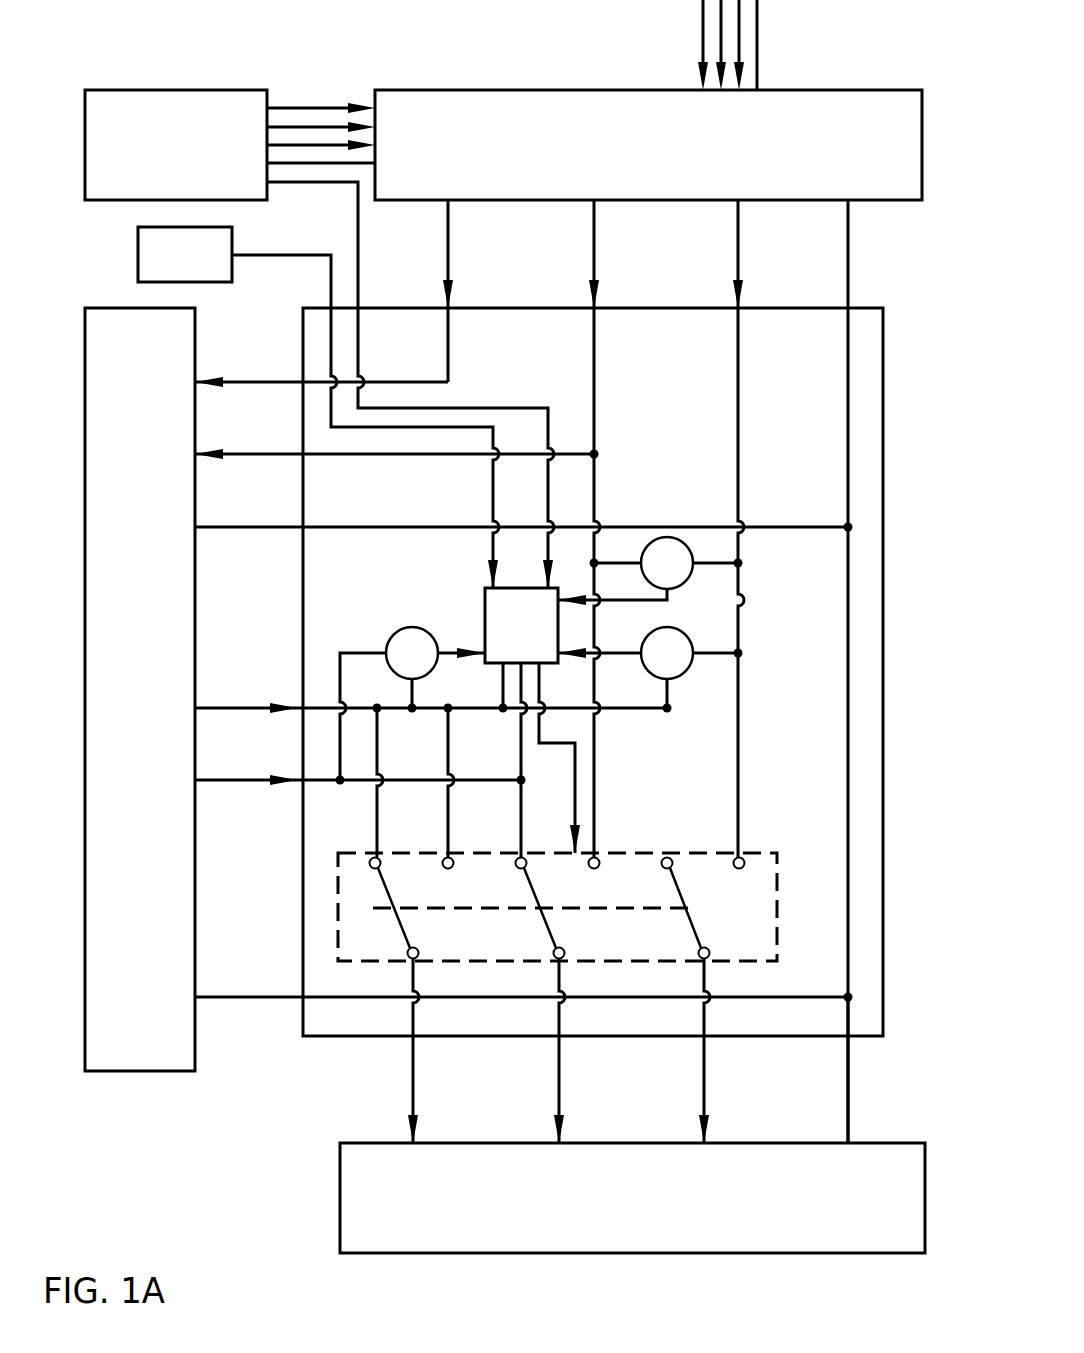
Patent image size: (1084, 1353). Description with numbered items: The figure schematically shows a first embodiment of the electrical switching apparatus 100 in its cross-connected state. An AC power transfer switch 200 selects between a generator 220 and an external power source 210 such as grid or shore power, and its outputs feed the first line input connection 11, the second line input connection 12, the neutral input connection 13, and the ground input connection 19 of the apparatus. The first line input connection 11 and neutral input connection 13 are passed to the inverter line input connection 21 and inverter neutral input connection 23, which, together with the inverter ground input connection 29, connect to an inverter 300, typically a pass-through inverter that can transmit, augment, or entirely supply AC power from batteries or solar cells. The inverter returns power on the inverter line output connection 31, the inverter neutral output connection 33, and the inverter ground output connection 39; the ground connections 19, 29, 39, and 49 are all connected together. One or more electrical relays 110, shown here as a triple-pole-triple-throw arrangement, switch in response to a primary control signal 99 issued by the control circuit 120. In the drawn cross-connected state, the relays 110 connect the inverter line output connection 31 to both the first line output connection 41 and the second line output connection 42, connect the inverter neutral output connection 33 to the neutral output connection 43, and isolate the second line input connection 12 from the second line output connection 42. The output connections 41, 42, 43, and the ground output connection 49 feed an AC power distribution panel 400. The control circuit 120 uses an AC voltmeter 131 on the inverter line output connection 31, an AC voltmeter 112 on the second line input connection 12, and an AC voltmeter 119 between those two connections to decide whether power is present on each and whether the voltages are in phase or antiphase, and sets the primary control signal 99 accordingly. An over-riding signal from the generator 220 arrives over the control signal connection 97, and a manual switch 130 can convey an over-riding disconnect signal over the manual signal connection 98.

The external power source 210 is at (797, 31).
The generator 220 is at (155, 160).
The AC power transfer switch 200 is at (612, 160).
The manual switch 130 is at (164, 268).
The first line input connection 11 is at (448, 228).
The neutral input connection 13 is at (594, 228).
The second line input connection 12 is at (738, 222).
The ground input connection 19 is at (850, 282).
The inverter line input connection 21 is at (260, 378).
The control signal connection 97 is at (495, 408).
The electrical switching apparatus 100 is at (877, 443).
The inverter neutral input connection 23 is at (265, 457).
The manual signal connection 98 is at (493, 478).
The inverter ground input connection 29 is at (242, 530).
The inverter 300 is at (119, 650).
The AC voltmeter or voltage sensor 131 is at (395, 635).
The control circuit 120 is at (501, 641).
The AC voltmeter or voltage sensor 112 is at (685, 578).
The inverter line output connection 31 is at (242, 705).
The AC voltmeter or voltage sensor 119 is at (685, 672).
The electrical relays 110 is at (763, 853).
The primary control signal 99 is at (573, 765).
The inverter neutral output connection 33 is at (228, 783).
The first line output connection 41 is at (413, 1058).
The neutral output connection 43 is at (559, 1058).
The second line output connection 42 is at (704, 1058).
The ground output connection 49 is at (848, 1065).
The inverter ground output connection 39 is at (240, 1000).
The AC power distribution panel 400 is at (612, 1214).